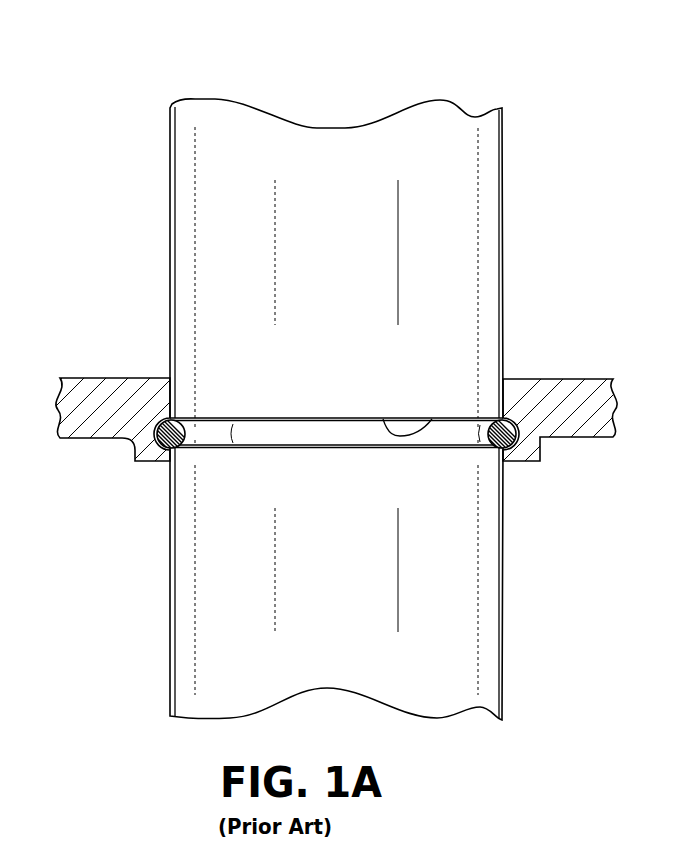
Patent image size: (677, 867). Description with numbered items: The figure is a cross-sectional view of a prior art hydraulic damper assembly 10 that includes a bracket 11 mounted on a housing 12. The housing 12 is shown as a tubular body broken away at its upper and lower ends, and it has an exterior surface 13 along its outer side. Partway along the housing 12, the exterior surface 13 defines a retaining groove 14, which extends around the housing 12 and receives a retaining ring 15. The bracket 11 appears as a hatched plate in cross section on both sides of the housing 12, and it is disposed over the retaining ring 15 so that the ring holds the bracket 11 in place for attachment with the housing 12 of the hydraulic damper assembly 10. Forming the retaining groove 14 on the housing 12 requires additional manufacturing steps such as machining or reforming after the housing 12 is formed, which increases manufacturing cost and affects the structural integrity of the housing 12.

The hydraulic damper assembly 10 is at (126, 126).
The bracket 11 is at (610, 379).
The housing 12 is at (482, 552).
The exterior surface 13 is at (505, 177).
The retaining groove 14 is at (430, 418).
The retaining ring 15 is at (230, 434).